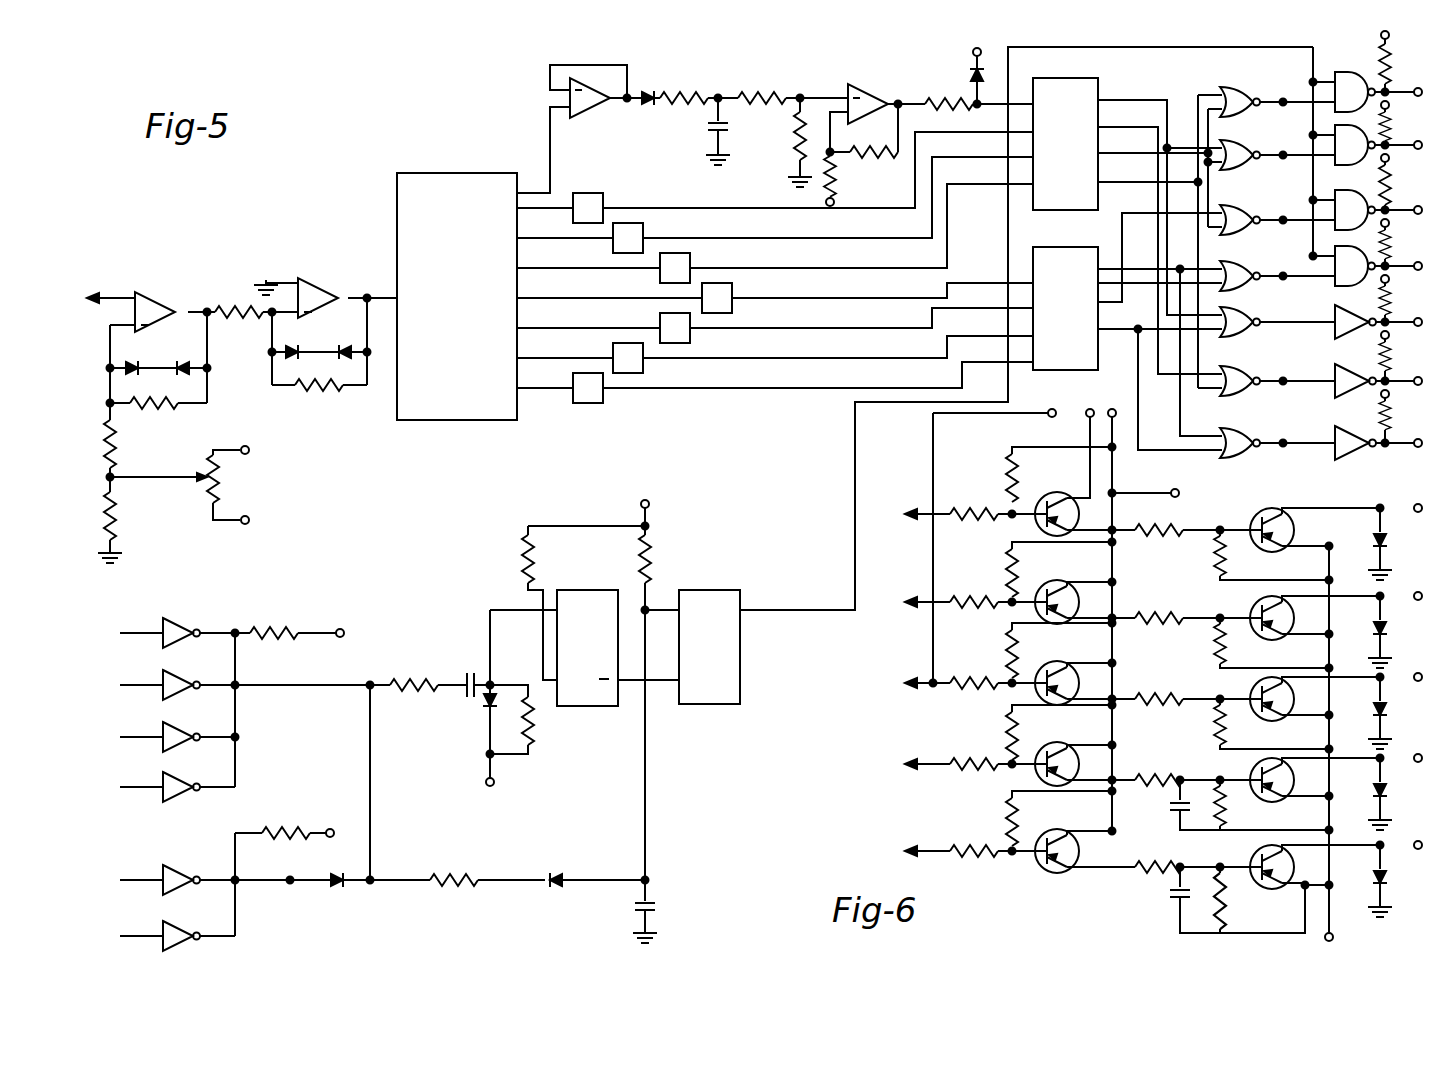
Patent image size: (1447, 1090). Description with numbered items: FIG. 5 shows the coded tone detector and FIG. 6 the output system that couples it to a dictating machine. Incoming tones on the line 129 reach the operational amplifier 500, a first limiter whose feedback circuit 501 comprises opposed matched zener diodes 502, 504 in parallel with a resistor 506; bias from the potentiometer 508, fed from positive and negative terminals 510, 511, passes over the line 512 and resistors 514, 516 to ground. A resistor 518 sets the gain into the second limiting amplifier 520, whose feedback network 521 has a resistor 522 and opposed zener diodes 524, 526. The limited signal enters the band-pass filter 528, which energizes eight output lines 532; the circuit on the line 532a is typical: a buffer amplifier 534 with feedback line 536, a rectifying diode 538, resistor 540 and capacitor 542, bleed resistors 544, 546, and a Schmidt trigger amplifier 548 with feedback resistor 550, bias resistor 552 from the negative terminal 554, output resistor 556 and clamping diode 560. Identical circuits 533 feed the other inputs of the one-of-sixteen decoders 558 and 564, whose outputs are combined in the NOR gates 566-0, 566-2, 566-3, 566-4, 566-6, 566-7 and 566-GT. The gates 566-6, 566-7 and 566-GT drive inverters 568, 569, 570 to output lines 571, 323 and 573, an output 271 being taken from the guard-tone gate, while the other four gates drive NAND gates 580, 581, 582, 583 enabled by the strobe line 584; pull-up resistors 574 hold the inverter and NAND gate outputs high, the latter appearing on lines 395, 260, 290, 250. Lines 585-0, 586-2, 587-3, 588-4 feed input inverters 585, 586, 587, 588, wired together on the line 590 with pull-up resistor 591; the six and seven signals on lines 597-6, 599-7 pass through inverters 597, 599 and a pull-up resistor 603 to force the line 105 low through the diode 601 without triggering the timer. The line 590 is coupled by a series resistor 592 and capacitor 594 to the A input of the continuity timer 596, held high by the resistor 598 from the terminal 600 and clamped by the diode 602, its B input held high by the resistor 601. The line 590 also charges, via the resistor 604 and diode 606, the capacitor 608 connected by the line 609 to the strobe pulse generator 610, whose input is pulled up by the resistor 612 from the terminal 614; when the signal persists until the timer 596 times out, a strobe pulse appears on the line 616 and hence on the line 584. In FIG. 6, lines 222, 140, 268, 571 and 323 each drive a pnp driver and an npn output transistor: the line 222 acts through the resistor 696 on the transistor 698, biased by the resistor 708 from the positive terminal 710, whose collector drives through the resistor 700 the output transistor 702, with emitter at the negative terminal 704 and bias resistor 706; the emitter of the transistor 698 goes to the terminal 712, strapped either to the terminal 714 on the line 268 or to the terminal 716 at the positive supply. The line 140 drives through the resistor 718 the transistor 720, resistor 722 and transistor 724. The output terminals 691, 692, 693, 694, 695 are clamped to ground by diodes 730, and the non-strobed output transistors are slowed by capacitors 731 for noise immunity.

In FIG. 5, the line 129 is at (110, 290).
In FIG. 5, the operational amplifier 500 is at (172, 300).
In FIG. 5, the feedback circuit 501 is at (96, 318).
In FIG. 5, the zener diode 502 is at (138, 362).
In FIG. 5, the zener diode 504 is at (190, 368).
In FIG. 5, the resistor 506 is at (145, 412).
In FIG. 5, the potentiometer 508 is at (220, 480).
In FIG. 5, the terminal 510 is at (252, 452).
In FIG. 5, the terminal 511 is at (247, 526).
In FIG. 5, the line 512 is at (152, 480).
In FIG. 5, the resistor 514 is at (108, 448).
In FIG. 5, the resistor 516 is at (108, 508).
In FIG. 5, the resistor 518 is at (238, 308).
In FIG. 5, the limiting operational amplifier 520 is at (328, 290).
In FIG. 5, the feedback network 521 is at (332, 432).
In FIG. 5, the resistor 522 is at (312, 392).
In FIG. 5, the zener diode 524 is at (300, 345).
In FIG. 5, the zener diode 526 is at (352, 362).
In FIG. 5, the band-pass filter 528 is at (445, 422).
In FIG. 5, the output lines 532 is at (539, 398).
In FIG. 5, the line 532a is at (538, 178).
In FIG. 5, the circuits 533 is at (672, 392).
In FIG. 5, the operational amplifier 534 is at (596, 110).
In FIG. 5, the line 536 is at (590, 65).
In FIG. 5, the diode 538 is at (648, 92).
In FIG. 5, the resistor 540 is at (692, 95).
In FIG. 5, the capacitor 542 is at (710, 132).
In FIG. 5, the resistor 544 is at (765, 95).
In FIG. 5, the resistor 546 is at (798, 140).
In FIG. 5, the amplifier 548 is at (868, 95).
In FIG. 5, the feedback resistor 550 is at (866, 156).
In FIG. 5, the resistor 552 is at (826, 175).
In FIG. 5, the terminal 554 is at (828, 206).
In FIG. 5, the resistor 556 is at (950, 102).
In FIG. 5, the decoder unit 558 is at (1068, 85).
In FIG. 5, the clamping diode 560 is at (968, 76).
In FIG. 5, the decoder 564 is at (1060, 250).
In FIG. 5, the NOR gate 566-0 is at (1212, 90).
In FIG. 5, the NOR gate 566-2 is at (1260, 148).
In FIG. 5, the NOR gate 566-3 is at (1245, 202).
In FIG. 5, the NOR gate 566-4 is at (1246, 268).
In FIG. 5, the NOR gate 566-6 is at (1234, 304).
In FIG. 5, the NOR gate 566-7 is at (1245, 365).
In FIG. 5, the NOR gate 566-GT is at (1252, 432).
In FIG. 5, the inverter 568 is at (1348, 316).
In FIG. 5, the inverter 569 is at (1283, 381).
In FIG. 5, the inverter 570 is at (1348, 440).
In FIG. 5, the output line 571 is at (1390, 314).
In FIG. 6, the output line 571 is at (935, 762).
In FIG. 5, the output line 573 is at (1390, 436).
In FIG. 5, the pull-up resistors 574 is at (1387, 36).
In FIG. 5, the NAND gate 580 is at (1345, 78).
In FIG. 5, the NAND gate 581 is at (1336, 130).
In FIG. 5, the NAND gate 582 is at (1350, 184).
In FIG. 5, the NAND gate 583 is at (1350, 242).
In FIG. 5, the line 584 is at (1160, 50).
In FIG. 5, the input inverter 585 is at (190, 628).
In FIG. 5, the line 585-0 is at (1283, 102).
In FIG. 5, the input inverter 586 is at (176, 682).
In FIG. 5, the line 586-2 is at (1283, 132).
In FIG. 5, the input inverter 587 is at (176, 732).
In FIG. 5, the line 587-3 is at (1283, 196).
In FIG. 5, the input inverter 588 is at (178, 782).
In FIG. 5, the line 588-4 is at (1283, 252).
In FIG. 5, the output line 590 is at (314, 684).
In FIG. 5, the pull-up resistor 591 is at (288, 628).
In FIG. 5, the series resistor 592 is at (422, 680).
In FIG. 5, the capacitor 594 is at (462, 695).
In FIG. 5, the monostable multivibrator 596 is at (582, 586).
In FIG. 5, the buffer 597 is at (176, 876).
In FIG. 5, the signal line 597-6 is at (1275, 324).
In FIG. 5, the resistor 598 is at (536, 730).
In FIG. 5, the buffer 599 is at (178, 932).
In FIG. 5, the signal line 599-7 is at (1305, 384).
In FIG. 5, the terminal 600 is at (488, 788).
In FIG. 5, the diode 601 is at (340, 890).
In FIG. 5, the diode 602 is at (482, 715).
In FIG. 5, the pull-up resistor 603 is at (278, 830).
In FIG. 5, the resistor 604 is at (458, 888).
In FIG. 5, the diode 606 is at (555, 872).
In FIG. 5, the capacitor 608 is at (656, 902).
In FIG. 5, the line 609 is at (650, 796).
In FIG. 5, the monostable multivibrator 610 is at (718, 593).
In FIG. 5, the resistor 612 is at (660, 560).
In FIG. 5, the terminal 614 is at (640, 505).
In FIG. 5, the line 616 is at (845, 485).
In FIG. 5, the resistor 395 is at (1390, 84).
In FIG. 5, the resistor 260 is at (1390, 140).
In FIG. 5, the resistor 290 is at (1390, 202).
In FIG. 5, the resistor 250 is at (1390, 260).
In FIG. 5, the output line 323 is at (1390, 374).
In FIG. 6, the output line 323 is at (940, 848).
In FIG. 5, the output signal 271 is at (1283, 443).
In FIG. 5, the line 105 is at (290, 880).
In FIG. 6, the line 222 is at (920, 510).
In FIG. 6, the line 140 is at (918, 600).
In FIG. 6, the line 268 is at (905, 680).
In FIG. 6, the resistor 696 is at (988, 510).
In FIG. 6, the transistor 698 is at (1050, 492).
In FIG. 6, the resistor 700 is at (1158, 538).
In FIG. 6, the output transistor 702 is at (1282, 508).
In FIG. 6, the terminal 704 is at (1336, 940).
In FIG. 6, the resistor 706 is at (1228, 558).
In FIG. 6, the resistor 708 is at (1008, 476).
In FIG. 6, the terminal 710 is at (1176, 497).
In FIG. 6, the terminal 712 is at (1086, 418).
In FIG. 6, the terminal 714 is at (1048, 418).
In FIG. 6, the terminal 716 is at (1116, 420).
In FIG. 6, the resistor 718 is at (993, 598).
In FIG. 6, the transistor 720 is at (1050, 584).
In FIG. 6, the resistor 722 is at (1158, 612).
In FIG. 6, the transistor 724 is at (1272, 598).
In FIG. 6, the diode 730 is at (1372, 540).
In FIG. 6, the capacitor 731 is at (1172, 808).
In FIG. 6, the output terminal 691 is at (1416, 504).
In FIG. 6, the output terminal 692 is at (1416, 592).
In FIG. 6, the output terminal 693 is at (1416, 673).
In FIG. 6, the output terminal 694 is at (1416, 754).
In FIG. 6, the output terminal 695 is at (1416, 841).